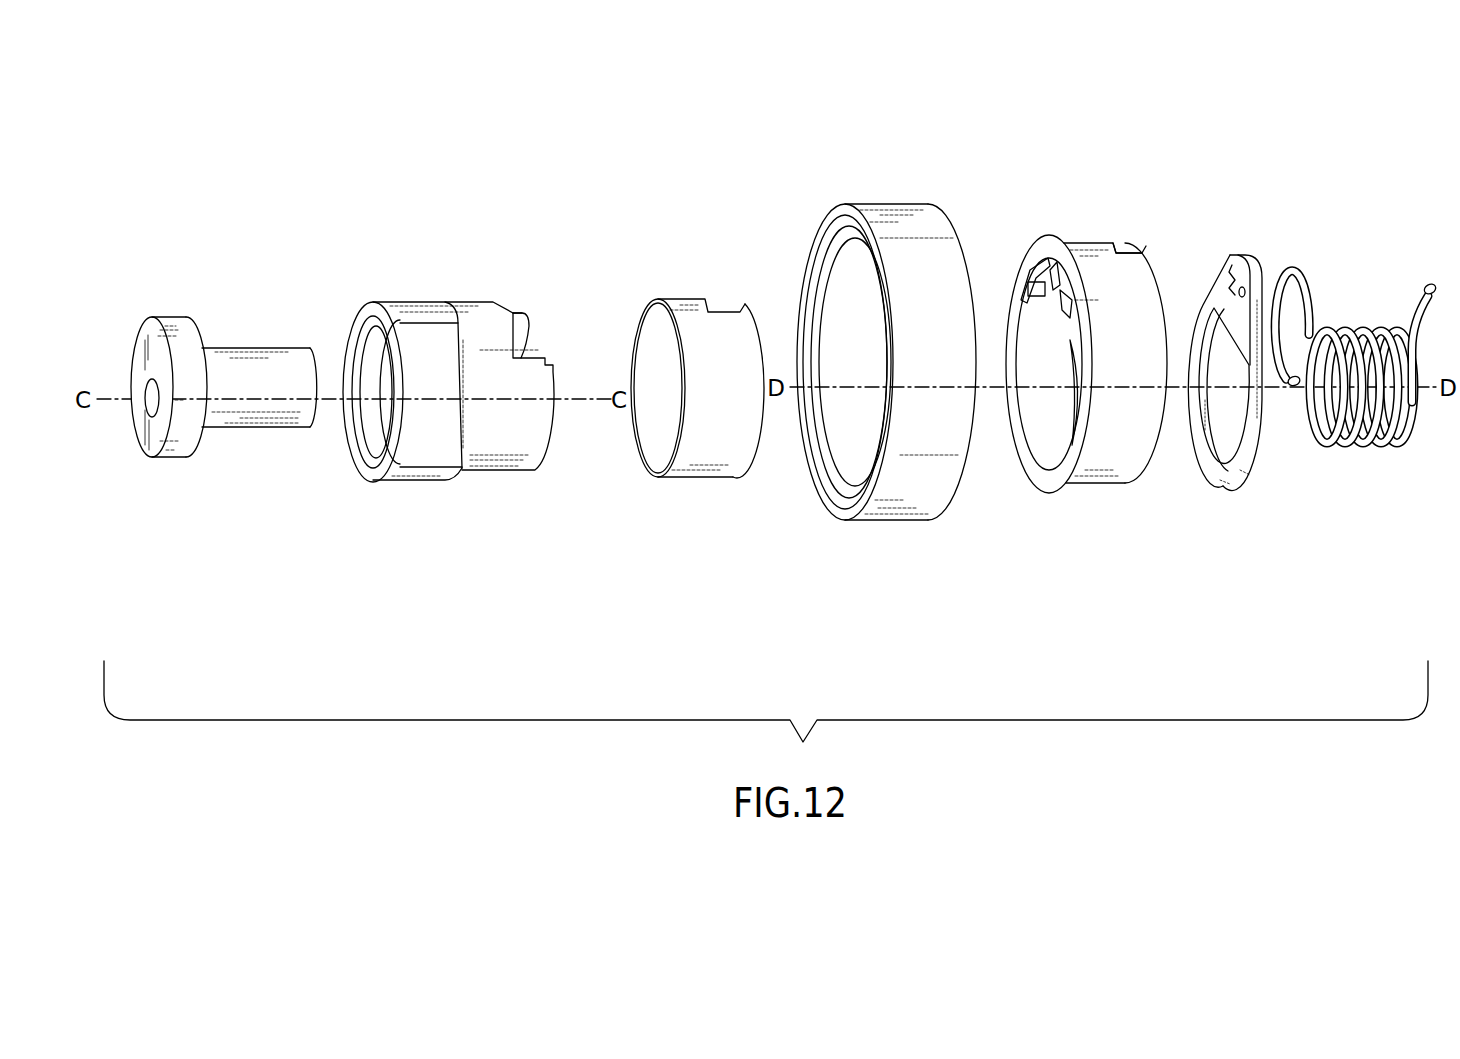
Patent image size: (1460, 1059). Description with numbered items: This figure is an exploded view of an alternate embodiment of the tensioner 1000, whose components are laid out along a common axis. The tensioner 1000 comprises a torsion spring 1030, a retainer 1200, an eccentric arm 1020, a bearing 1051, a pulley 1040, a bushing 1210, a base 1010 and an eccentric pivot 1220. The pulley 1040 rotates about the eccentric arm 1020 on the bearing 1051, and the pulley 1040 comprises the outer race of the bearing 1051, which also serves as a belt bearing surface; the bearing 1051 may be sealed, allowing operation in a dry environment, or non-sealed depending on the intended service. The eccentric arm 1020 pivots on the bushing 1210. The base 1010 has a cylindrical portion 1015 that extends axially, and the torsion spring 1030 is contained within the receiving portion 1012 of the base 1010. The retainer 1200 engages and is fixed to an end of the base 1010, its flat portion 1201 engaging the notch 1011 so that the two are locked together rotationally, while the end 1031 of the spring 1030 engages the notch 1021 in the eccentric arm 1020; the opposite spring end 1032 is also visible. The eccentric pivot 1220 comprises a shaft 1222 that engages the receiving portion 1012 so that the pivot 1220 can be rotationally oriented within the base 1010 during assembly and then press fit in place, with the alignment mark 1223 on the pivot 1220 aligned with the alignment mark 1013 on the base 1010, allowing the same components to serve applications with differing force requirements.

The tensioner 1000 is at (1108, 170).
The base 1010 is at (488, 472).
The notch 1011 is at (530, 346).
The receiving portion 1012 is at (376, 348).
The alignment mark 1013 is at (392, 356).
The cylindrical portion 1015 is at (473, 453).
The eccentric arm 1020 is at (1095, 483).
The notch 1021 is at (1123, 255).
The torsion spring 1030 is at (1340, 447).
The end 1031 is at (1418, 287).
The spring inner end 1032 is at (1292, 374).
The pulley 1040 is at (875, 525).
The bearing 1051 is at (855, 257).
The retainer 1200 is at (1238, 487).
The flat portion 1201 is at (1217, 345).
The bushing 1210 is at (682, 477).
The eccentric pivot 1220 is at (167, 460).
The shaft 1222 is at (233, 415).
The alignment mark 1223 is at (170, 365).